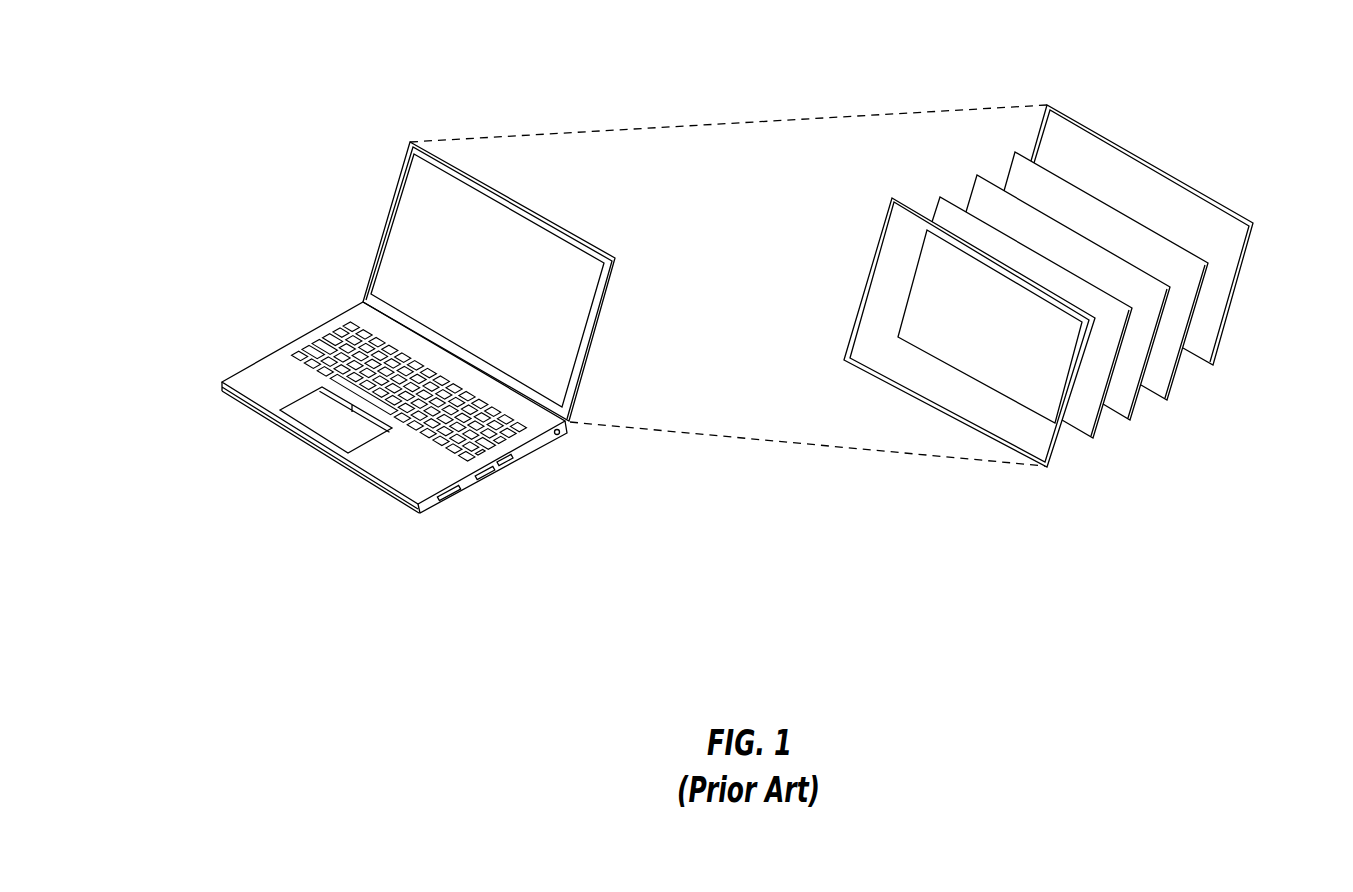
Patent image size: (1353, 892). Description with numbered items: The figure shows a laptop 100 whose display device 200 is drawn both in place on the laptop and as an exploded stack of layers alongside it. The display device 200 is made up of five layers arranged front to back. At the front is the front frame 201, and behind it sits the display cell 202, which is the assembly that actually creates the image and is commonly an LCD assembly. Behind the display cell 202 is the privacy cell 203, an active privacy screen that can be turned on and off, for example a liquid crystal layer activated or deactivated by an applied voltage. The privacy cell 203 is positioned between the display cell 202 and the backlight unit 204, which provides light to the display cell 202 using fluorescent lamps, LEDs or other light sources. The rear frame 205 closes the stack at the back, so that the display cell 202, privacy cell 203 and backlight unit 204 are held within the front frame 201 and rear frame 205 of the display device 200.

The laptop 100 is at (198, 303).
The display device 200 is at (392, 190).
The front frame 201 is at (1047, 465).
The display cell 202 is at (1093, 440).
The privacy cell 203 is at (1130, 408).
The backlight unit 204 is at (1165, 377).
The rear frame 205 is at (1205, 358).